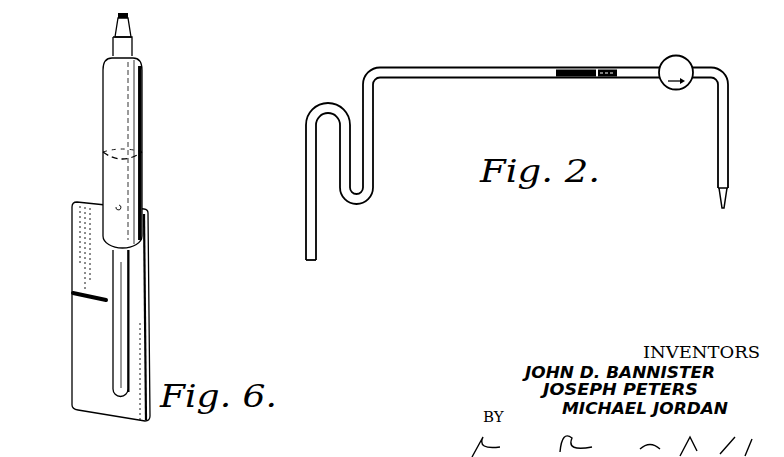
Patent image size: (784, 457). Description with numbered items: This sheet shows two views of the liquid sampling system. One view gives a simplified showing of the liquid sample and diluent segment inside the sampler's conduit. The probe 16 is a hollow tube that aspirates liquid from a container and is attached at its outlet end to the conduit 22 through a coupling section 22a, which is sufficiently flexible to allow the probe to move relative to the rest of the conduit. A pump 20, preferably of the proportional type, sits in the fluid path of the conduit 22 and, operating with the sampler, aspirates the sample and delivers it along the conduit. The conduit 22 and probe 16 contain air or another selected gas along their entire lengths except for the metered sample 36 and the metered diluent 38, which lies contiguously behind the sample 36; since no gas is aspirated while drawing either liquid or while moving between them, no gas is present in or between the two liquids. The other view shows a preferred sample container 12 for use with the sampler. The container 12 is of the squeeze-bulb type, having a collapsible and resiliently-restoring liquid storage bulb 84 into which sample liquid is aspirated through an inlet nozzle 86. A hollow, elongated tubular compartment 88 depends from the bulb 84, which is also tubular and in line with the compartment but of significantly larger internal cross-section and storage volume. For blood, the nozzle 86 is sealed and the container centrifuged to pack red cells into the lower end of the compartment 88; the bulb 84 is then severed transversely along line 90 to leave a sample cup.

In FIG. 6, the container 12 is at (90, 176).
In FIG. 6, the liquid storage bulb 84 is at (128, 118).
In FIG. 6, the inlet nozzle 86 is at (131, 33).
In FIG. 6, the tubular compartment 88 is at (118, 313).
In FIG. 6, the line 90 is at (143, 151).
In FIG. 2, the probe 16 is at (306, 248).
In FIG. 2, the conduit 22 is at (463, 68).
In FIG. 2, the coupling section 22a is at (374, 174).
In FIG. 2, the metered sample 36 is at (604, 69).
In FIG. 2, the metered diluent 38 is at (562, 69).
In FIG. 2, the pump 20 is at (690, 60).